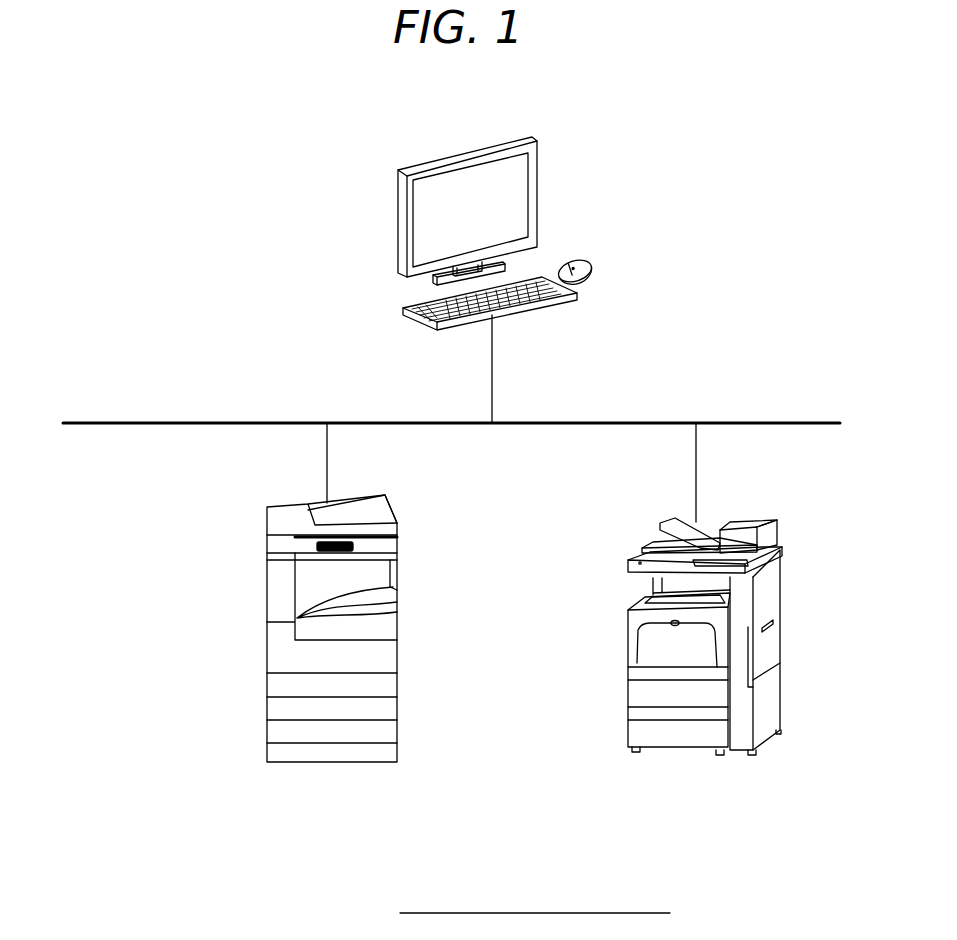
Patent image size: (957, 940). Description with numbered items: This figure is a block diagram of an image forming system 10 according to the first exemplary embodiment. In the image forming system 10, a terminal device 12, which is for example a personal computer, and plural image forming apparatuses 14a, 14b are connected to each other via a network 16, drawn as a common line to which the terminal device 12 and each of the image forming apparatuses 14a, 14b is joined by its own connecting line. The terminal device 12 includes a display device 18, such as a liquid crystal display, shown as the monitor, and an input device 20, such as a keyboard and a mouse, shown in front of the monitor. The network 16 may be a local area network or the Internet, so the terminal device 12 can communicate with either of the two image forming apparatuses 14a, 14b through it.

The image forming system 10 is at (464, 488).
The terminal device 12 is at (466, 197).
The image forming apparatus 14a is at (385, 653).
The image forming apparatus 14b is at (765, 655).
The network 16 is at (808, 423).
The display device 18 is at (483, 188).
The input device 20 is at (433, 303).